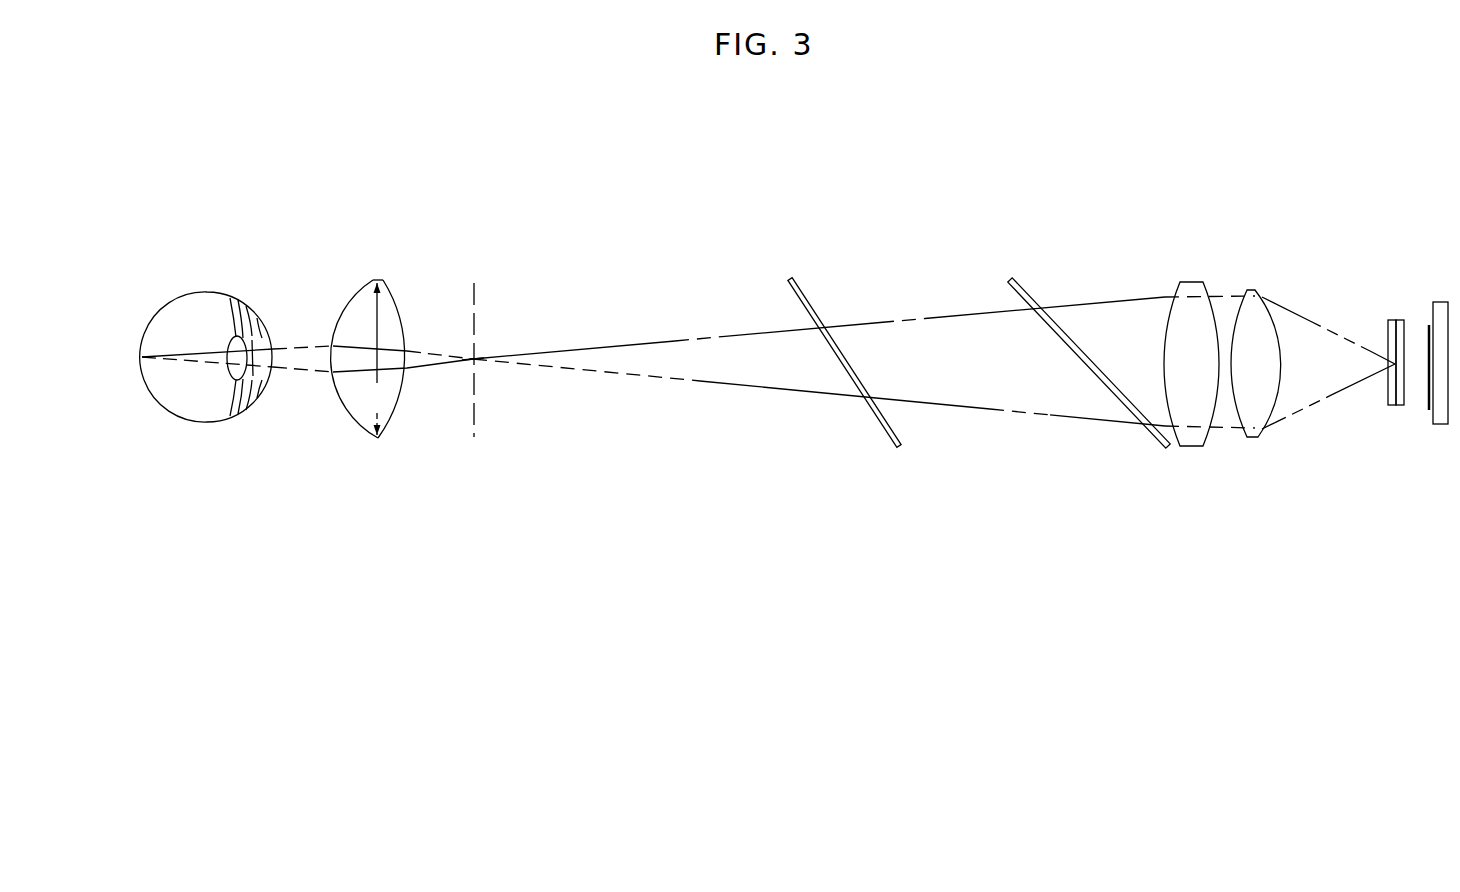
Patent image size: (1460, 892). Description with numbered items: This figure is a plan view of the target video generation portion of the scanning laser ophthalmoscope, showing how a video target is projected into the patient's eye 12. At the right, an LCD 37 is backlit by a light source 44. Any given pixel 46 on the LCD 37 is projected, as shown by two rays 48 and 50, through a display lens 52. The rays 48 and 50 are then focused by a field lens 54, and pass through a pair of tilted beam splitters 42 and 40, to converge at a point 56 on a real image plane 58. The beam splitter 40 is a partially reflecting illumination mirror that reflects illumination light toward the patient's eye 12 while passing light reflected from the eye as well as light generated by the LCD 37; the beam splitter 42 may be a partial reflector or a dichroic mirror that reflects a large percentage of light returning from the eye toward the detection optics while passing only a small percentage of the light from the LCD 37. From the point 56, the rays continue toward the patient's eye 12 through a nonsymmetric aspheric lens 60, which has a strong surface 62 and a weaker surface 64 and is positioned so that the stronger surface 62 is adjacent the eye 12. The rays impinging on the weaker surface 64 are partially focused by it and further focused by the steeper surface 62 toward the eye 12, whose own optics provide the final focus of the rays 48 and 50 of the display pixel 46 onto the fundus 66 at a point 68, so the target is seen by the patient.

The patient's eye 12 is at (205, 428).
The fundus 66 is at (158, 408).
The point 68 is at (141, 345).
The nonsymmetric aspheric lens 60 is at (415, 375).
The strong surface 62 is at (352, 290).
The weaker surface 64 is at (395, 292).
The point 56 is at (484, 356).
The real image plane 58 is at (477, 432).
The ray 48 is at (907, 315).
The ray 50 is at (953, 412).
The beam splitter 40 is at (868, 414).
The beam splitter 42 is at (1095, 390).
The field lens 54 is at (1190, 450).
The display lens 52 is at (1253, 442).
The LCD 37 is at (1342, 374).
The pixel 46 is at (1402, 374).
The light source 44 is at (1428, 312).